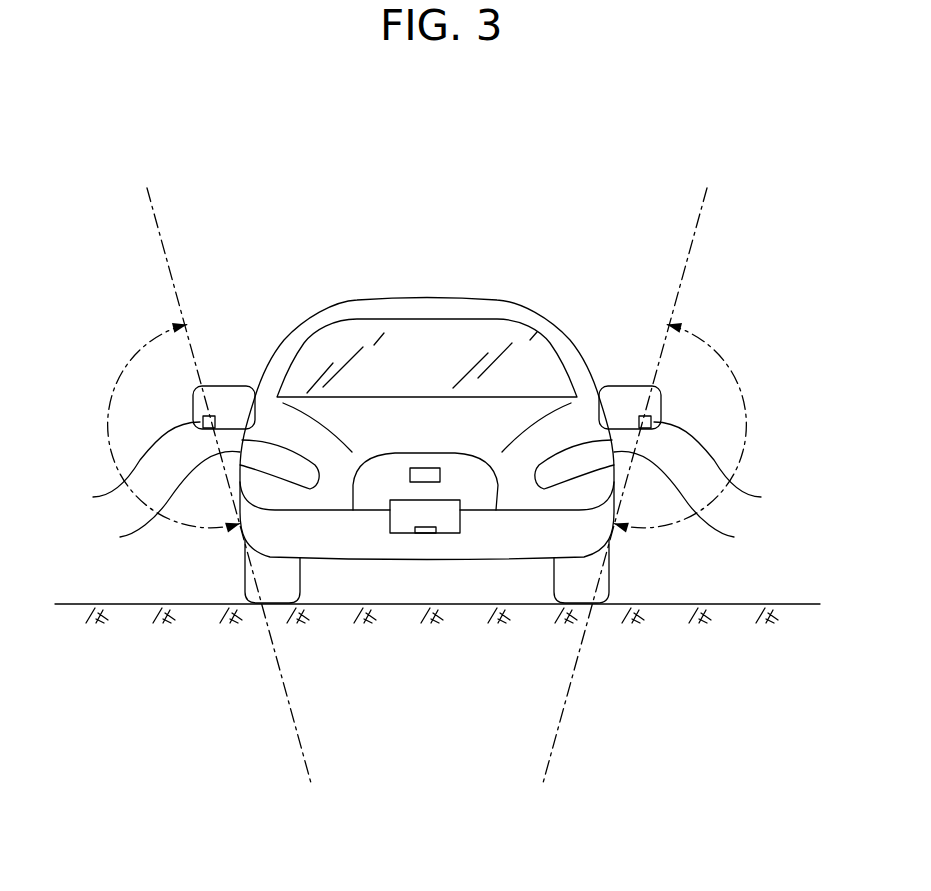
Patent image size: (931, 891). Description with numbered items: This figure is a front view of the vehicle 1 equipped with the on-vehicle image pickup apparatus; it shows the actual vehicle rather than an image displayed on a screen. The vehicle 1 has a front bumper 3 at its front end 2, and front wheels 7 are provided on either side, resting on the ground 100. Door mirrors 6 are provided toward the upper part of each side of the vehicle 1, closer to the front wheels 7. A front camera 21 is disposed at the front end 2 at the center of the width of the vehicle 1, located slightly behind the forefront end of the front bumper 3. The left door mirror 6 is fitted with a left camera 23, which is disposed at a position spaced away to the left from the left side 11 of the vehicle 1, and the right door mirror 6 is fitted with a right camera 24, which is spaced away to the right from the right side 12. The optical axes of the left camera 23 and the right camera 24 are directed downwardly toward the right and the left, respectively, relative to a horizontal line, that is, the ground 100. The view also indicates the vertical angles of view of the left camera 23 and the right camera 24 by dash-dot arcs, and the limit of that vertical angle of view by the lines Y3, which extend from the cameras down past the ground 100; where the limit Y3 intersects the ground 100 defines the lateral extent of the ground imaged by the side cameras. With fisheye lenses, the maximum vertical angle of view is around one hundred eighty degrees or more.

The vehicle 1 is at (516, 262).
The front end 2 is at (397, 475).
The front bumper 3 is at (477, 545).
The door mirror 6 is at (223, 400).
The front wheel 7 is at (245, 578).
The left side 11 is at (689, 502).
The right side 12 is at (166, 502).
The front camera 21 is at (420, 522).
The left camera 23 is at (724, 467).
The right camera 24 is at (131, 467).
The ground 100 is at (752, 604).
The limit of the angle of view Y3 is at (153, 207).